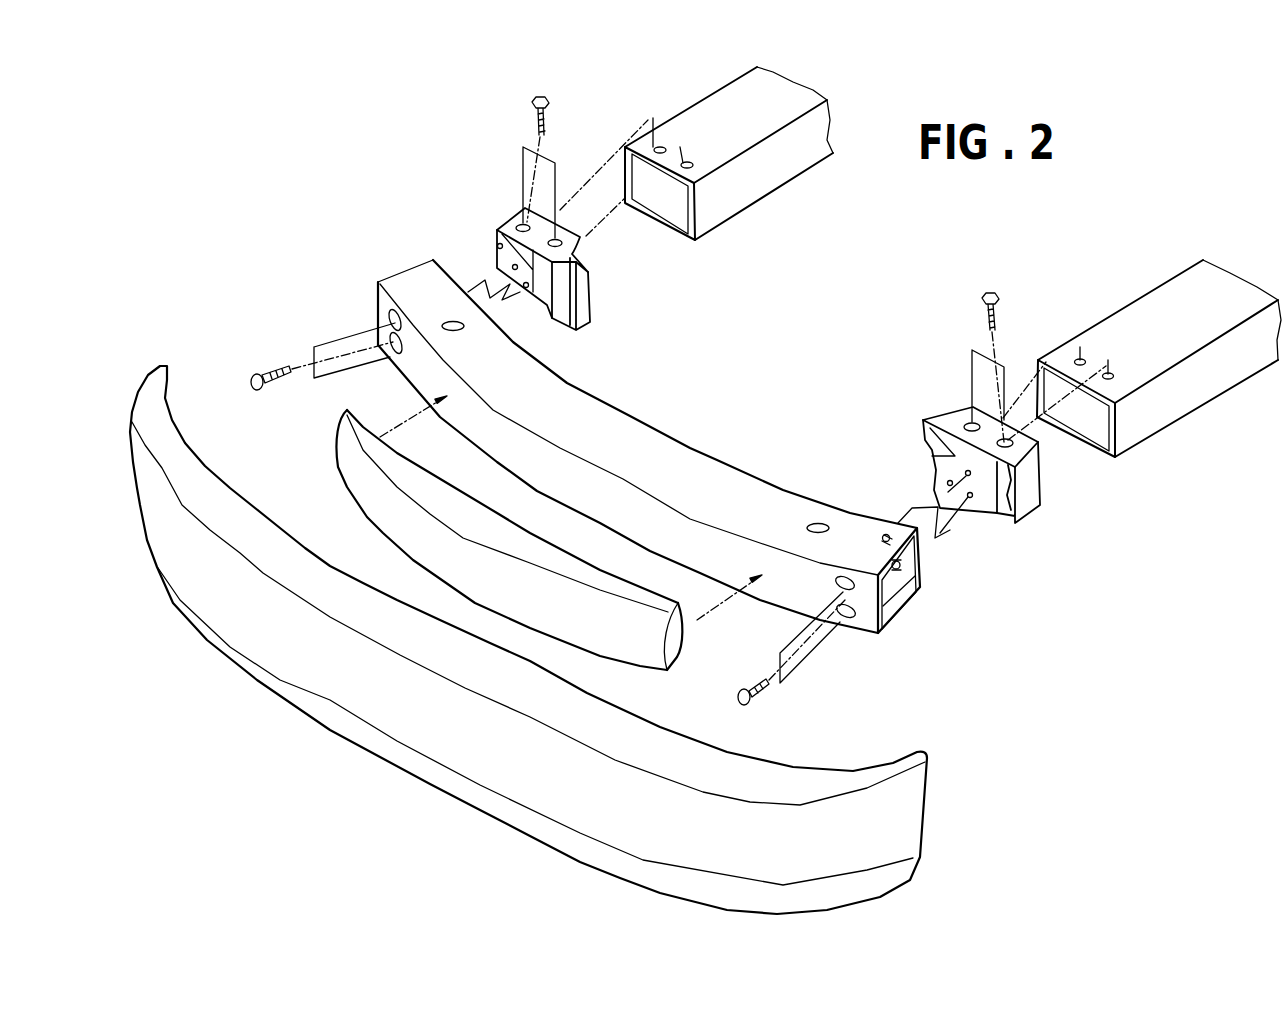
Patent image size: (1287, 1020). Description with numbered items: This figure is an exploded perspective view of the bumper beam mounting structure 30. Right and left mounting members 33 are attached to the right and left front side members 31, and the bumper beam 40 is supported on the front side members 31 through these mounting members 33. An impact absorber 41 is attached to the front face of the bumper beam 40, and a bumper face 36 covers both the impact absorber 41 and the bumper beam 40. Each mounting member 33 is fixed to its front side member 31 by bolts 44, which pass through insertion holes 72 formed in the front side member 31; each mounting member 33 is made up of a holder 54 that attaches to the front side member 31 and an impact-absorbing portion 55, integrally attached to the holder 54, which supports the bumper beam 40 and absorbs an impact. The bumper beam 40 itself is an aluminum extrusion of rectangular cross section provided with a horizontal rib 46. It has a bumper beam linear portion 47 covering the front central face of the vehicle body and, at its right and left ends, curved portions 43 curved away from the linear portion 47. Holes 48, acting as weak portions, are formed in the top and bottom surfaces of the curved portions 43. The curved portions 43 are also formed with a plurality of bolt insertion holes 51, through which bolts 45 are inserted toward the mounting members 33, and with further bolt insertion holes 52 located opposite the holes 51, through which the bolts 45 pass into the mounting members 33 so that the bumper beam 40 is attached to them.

The bumper beam mounting structure 30 is at (270, 117).
The front side member 31 is at (941, 244).
The mounting member 33 is at (801, 321).
The bumper face 36 is at (372, 697).
The bumper beam 40 is at (657, 445).
The impact absorber 41 is at (360, 494).
The curved portion 43 is at (413, 283).
The bolt 44 is at (530, 118).
The bolt 45 is at (277, 368).
The horizontal rib 46 is at (903, 587).
The bumper beam linear portion 47 is at (627, 440).
The hole 48 is at (452, 320).
The bolt insertion hole 51 is at (390, 316).
The bolt insertion hole 52 is at (884, 532).
The holder 54 is at (573, 250).
The impact-absorbing portion 55 is at (927, 430).
The insertion hole 72 is at (657, 146).